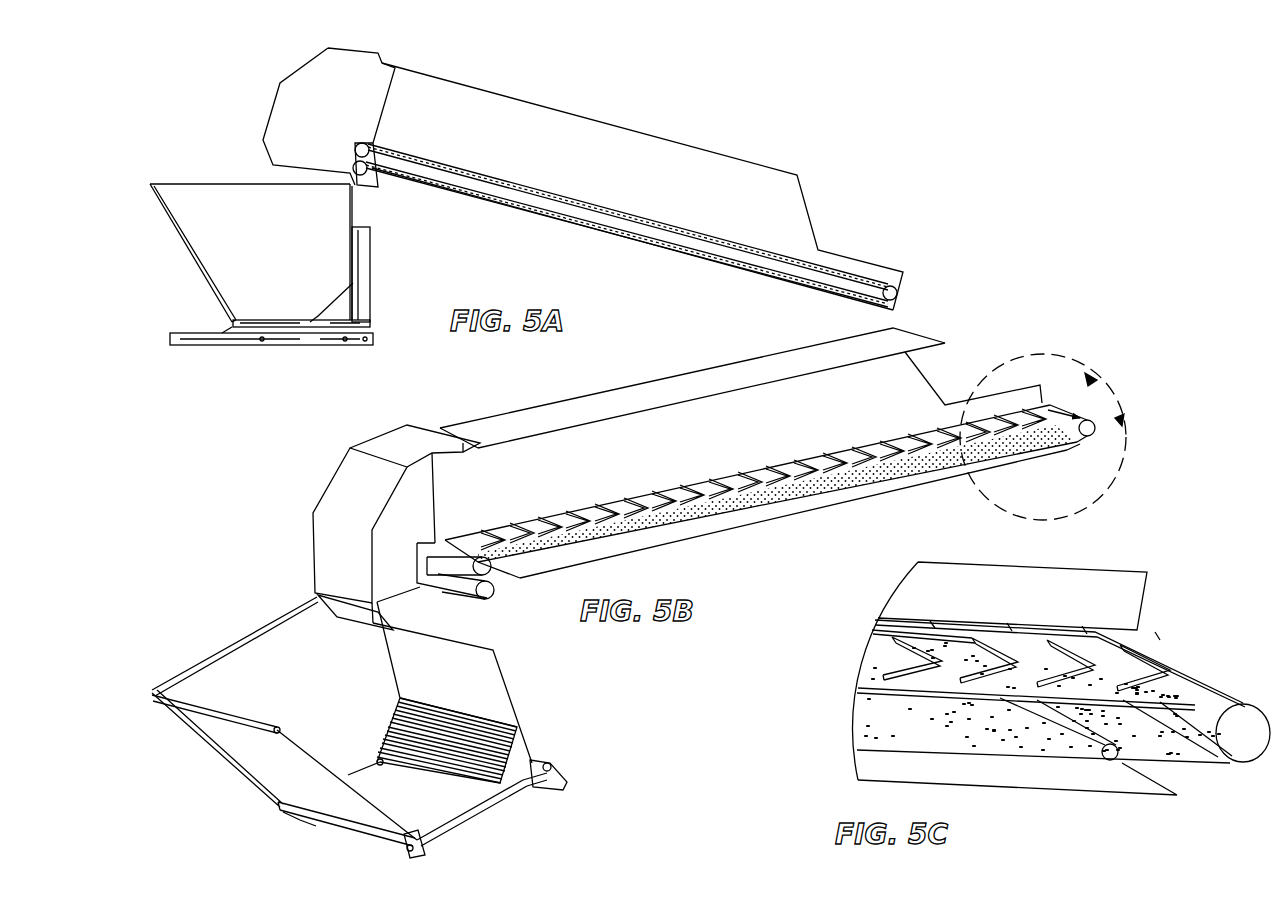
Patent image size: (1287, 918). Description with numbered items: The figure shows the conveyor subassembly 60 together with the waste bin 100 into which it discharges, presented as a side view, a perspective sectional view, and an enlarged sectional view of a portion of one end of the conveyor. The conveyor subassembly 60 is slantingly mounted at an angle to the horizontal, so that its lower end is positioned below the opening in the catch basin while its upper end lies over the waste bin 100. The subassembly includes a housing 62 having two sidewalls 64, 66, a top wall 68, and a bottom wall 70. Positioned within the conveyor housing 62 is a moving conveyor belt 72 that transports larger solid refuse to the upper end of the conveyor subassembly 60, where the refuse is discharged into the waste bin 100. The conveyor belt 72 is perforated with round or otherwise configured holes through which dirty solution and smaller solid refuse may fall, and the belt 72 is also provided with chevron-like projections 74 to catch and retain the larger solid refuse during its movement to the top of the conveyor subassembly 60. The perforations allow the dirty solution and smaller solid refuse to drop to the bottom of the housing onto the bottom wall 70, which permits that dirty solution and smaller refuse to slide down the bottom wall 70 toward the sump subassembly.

In FIG. 5A, the conveyor subassembly 60 is at (583, 176).
In FIG. 5B, the conveyor subassembly 60 is at (723, 479).
In FIG. 5A, the housing 62 is at (644, 125).
In FIG. 5A, the sidewall 64 is at (585, 170).
In FIG. 5B, the sidewall 66 is at (735, 448).
In FIG. 5C, the sidewall 66 is at (1027, 606).
In FIG. 5B, the top wall 68 is at (640, 395).
In FIG. 5A, the bottom wall 70 is at (516, 206).
In FIG. 5B, the bottom wall 70 is at (761, 496).
In FIG. 5C, the bottom wall 70 is at (1032, 730).
In FIG. 5B, the conveyor belt 72 is at (823, 442).
In FIG. 5C, the conveyor belt 72 is at (858, 719).
In FIG. 5C, the chevron-like projections 74 is at (893, 656).
In FIG. 5A, the waste bin 100 is at (232, 178).
In FIG. 5B, the waste bin 100 is at (513, 680).